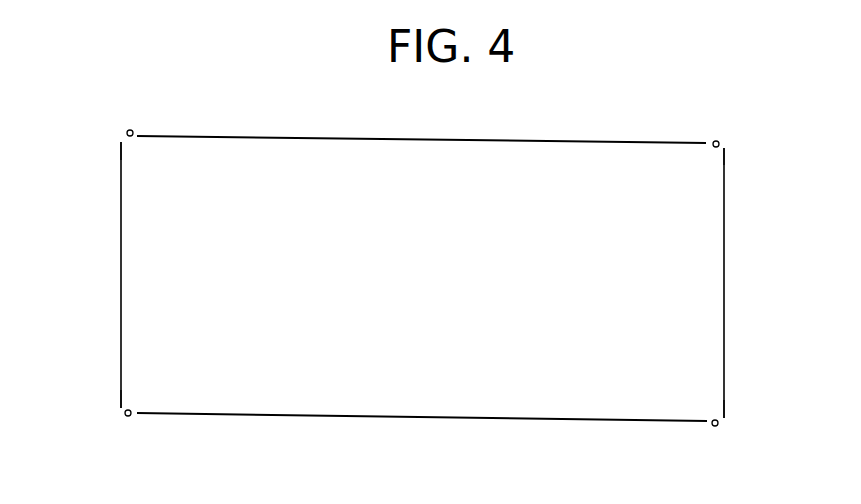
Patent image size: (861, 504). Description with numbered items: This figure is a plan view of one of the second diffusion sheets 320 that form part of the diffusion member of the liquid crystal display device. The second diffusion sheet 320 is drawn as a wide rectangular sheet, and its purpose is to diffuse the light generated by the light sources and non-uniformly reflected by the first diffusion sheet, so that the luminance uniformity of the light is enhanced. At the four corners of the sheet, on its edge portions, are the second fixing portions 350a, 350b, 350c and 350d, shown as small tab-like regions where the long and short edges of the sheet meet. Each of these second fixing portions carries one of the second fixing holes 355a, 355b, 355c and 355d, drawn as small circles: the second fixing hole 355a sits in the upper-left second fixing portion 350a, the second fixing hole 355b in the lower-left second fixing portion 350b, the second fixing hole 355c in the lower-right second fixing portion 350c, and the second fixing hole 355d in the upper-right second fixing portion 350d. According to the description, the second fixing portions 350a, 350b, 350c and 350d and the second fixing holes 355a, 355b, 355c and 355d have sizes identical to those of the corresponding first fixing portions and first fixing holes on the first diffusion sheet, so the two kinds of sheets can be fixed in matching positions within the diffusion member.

The second diffusion sheet 320 is at (390, 137).
The second fixing portion 350a is at (133, 130).
The second fixing portion 350b is at (126, 421).
The second fixing portion 350c is at (713, 428).
The second fixing portion 350d is at (723, 142).
The second fixing hole 355a is at (122, 138).
The second fixing hole 355b is at (124, 412).
The second fixing hole 355c is at (721, 422).
The second fixing hole 355d is at (713, 141).